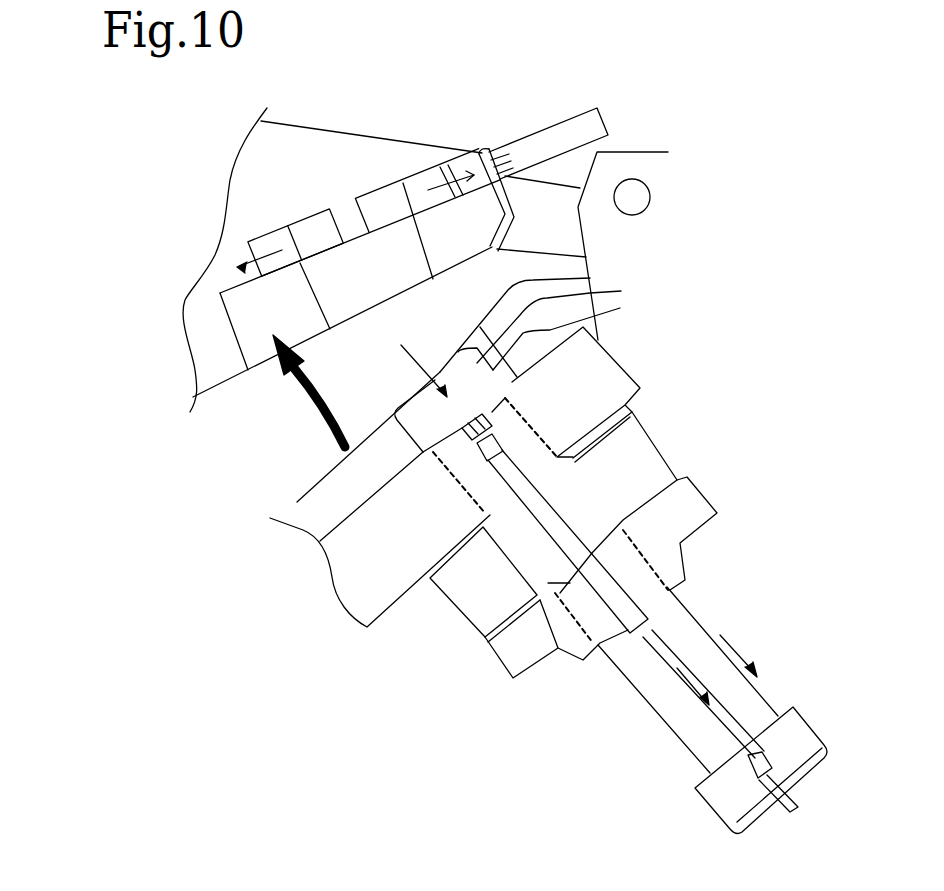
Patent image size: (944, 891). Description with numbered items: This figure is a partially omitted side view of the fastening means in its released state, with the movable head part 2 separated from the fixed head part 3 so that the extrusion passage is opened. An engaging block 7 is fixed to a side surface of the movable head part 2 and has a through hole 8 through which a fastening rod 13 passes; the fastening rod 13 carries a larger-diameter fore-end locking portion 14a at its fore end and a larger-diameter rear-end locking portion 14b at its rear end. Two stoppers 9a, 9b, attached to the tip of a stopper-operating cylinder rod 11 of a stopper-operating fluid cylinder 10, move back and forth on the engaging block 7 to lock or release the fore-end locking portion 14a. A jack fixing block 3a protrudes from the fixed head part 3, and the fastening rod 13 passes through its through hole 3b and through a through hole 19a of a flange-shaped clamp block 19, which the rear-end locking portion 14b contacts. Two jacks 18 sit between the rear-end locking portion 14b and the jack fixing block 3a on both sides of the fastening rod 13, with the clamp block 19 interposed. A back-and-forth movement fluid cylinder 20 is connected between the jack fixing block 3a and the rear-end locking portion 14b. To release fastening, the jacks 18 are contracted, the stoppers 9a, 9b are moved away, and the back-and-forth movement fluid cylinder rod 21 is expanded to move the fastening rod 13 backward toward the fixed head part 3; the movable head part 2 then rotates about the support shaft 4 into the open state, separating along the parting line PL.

The movable head part 2 is at (205, 363).
The fixed head part 3 is at (318, 518).
The jack fixing block 3a is at (603, 372).
The through hole 3b is at (521, 373).
The support shaft 4 is at (650, 201).
The engaging block 7 is at (487, 218).
The through hole 8 is at (320, 283).
The stopper 9a is at (418, 185).
The stopper 9b is at (270, 243).
The stopper-operating fluid cylinder 10 is at (535, 152).
The stopper-operating cylinder rod 11 is at (482, 152).
The fastening rod 13 is at (692, 635).
The fore-end locking portion 14a is at (592, 292).
The rear-end locking portion 14b is at (809, 738).
The jack 18 is at (645, 453).
The clamp block 19 is at (700, 503).
The through hole 19a is at (549, 580).
The back-and-forth movement fluid cylinder 20 is at (625, 630).
The back-and-forth movement fluid cylinder rod 21 is at (715, 715).
The parting line PL is at (208, 392).